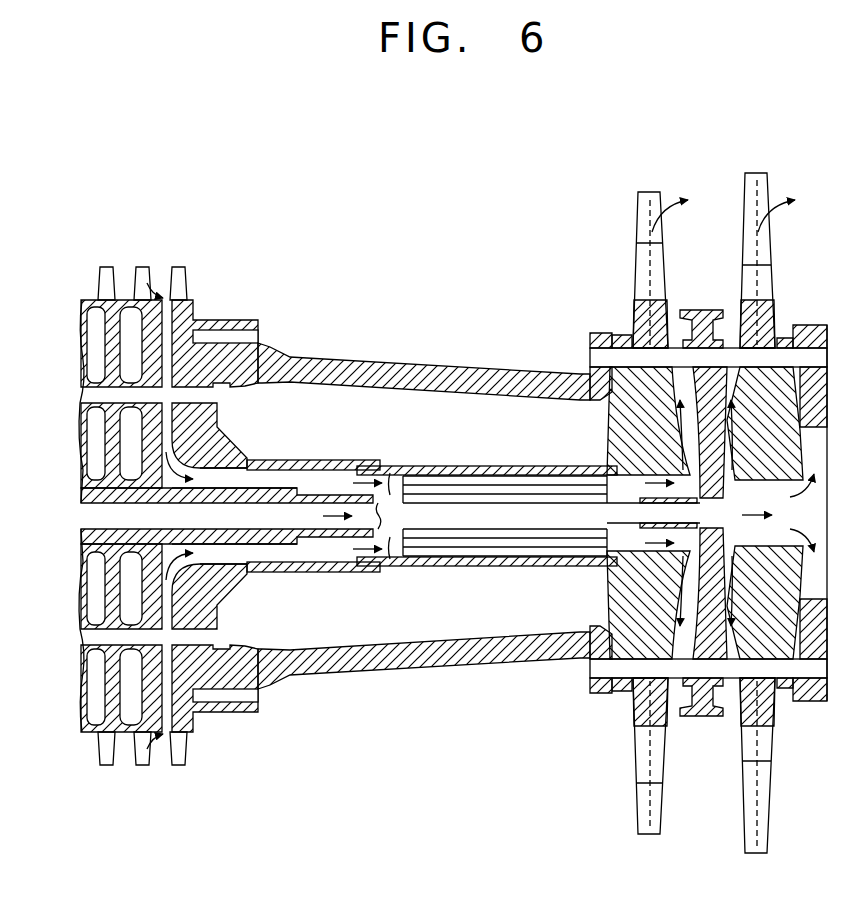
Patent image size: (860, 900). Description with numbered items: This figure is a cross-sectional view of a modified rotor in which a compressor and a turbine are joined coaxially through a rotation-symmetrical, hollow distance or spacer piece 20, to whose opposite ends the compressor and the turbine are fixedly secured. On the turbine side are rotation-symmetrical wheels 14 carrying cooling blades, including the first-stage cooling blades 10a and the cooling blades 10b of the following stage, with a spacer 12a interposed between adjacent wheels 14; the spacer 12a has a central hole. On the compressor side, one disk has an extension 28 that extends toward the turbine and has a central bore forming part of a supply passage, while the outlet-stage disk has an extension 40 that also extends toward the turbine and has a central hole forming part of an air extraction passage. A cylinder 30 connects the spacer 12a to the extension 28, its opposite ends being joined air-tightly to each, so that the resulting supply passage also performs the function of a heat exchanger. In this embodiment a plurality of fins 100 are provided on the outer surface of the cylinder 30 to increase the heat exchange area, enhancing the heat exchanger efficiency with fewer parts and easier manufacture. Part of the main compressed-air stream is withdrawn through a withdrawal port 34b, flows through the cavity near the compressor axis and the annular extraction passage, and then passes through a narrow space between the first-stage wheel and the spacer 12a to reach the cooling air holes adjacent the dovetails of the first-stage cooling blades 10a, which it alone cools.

The first-stage cooling blades 10a is at (641, 192).
The cooling blades 10b is at (754, 173).
The spacer 12a is at (700, 310).
The wheels 14 is at (630, 718).
The distance or spacer piece 20 is at (395, 358).
The extension 28 is at (247, 474).
The cylinder 30 is at (393, 466).
The extension 40 is at (318, 460).
The fins 100 is at (508, 476).
The withdrawal port 34b is at (160, 266).